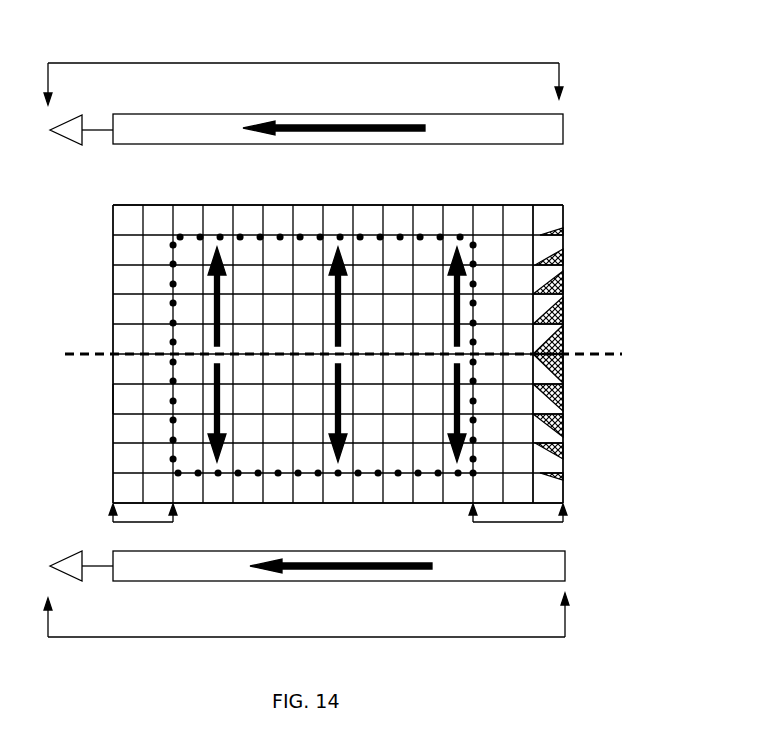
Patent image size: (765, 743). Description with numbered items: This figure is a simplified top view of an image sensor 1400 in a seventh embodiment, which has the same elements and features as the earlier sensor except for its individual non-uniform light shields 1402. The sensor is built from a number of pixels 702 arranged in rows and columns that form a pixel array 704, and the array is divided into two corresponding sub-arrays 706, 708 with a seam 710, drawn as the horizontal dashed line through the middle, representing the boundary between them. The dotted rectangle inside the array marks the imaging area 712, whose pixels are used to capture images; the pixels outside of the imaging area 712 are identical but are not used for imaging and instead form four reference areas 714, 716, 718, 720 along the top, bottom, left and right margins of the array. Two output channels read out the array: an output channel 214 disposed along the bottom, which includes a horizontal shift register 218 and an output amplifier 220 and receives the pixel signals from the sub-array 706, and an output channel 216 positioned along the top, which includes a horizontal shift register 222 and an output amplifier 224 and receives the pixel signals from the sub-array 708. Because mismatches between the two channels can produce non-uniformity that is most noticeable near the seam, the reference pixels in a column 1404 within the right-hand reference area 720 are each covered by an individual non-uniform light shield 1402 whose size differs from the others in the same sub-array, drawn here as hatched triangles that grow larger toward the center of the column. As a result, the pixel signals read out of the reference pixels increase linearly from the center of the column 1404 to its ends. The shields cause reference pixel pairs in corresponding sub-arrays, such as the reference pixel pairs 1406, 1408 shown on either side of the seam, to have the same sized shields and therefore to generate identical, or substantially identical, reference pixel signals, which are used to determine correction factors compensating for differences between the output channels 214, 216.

The output channel 216 is at (303, 72).
The horizontal shift register 222 is at (478, 114).
The output amplifier 224 is at (84, 114).
The image sensor 1400 is at (612, 149).
The column 1404 is at (545, 192).
The reference area 714 is at (100, 216).
The sub-array 708 is at (101, 278).
The individual non-uniform light shields 1402 is at (565, 229).
The reference pixel pair 1408 is at (565, 305).
The seam 710 is at (364, 355).
The pixel array 704 is at (112, 388).
The reference pixel pair 1406 is at (565, 393).
The sub-array 706 is at (100, 435).
The reference area 716 is at (100, 492).
The imaging area 712 is at (486, 459).
The reference area 718 is at (143, 526).
The pixels 702 is at (400, 487).
The reference area 720 is at (518, 526).
The output amplifier 220 is at (82, 578).
The horizontal shift register 218 is at (512, 582).
The output channel 214 is at (306, 627).